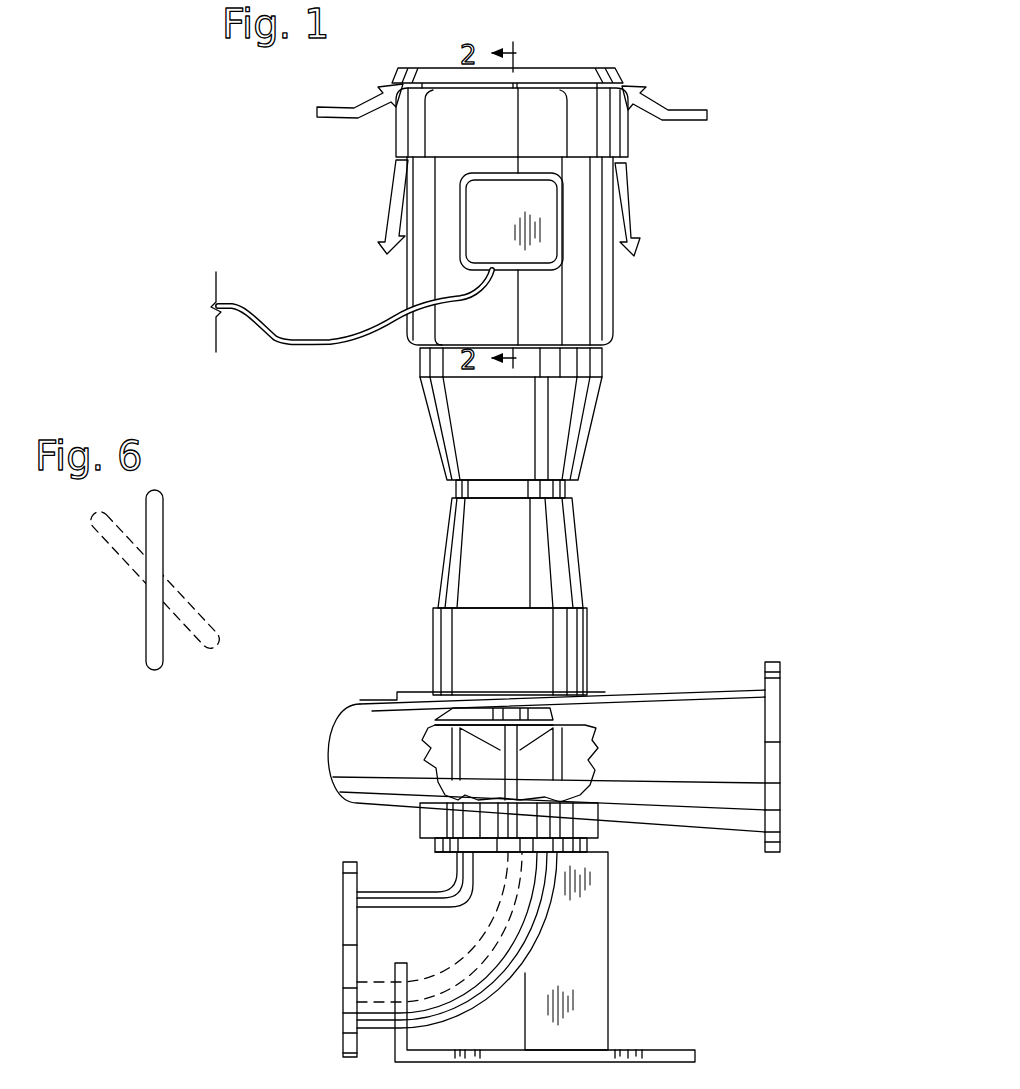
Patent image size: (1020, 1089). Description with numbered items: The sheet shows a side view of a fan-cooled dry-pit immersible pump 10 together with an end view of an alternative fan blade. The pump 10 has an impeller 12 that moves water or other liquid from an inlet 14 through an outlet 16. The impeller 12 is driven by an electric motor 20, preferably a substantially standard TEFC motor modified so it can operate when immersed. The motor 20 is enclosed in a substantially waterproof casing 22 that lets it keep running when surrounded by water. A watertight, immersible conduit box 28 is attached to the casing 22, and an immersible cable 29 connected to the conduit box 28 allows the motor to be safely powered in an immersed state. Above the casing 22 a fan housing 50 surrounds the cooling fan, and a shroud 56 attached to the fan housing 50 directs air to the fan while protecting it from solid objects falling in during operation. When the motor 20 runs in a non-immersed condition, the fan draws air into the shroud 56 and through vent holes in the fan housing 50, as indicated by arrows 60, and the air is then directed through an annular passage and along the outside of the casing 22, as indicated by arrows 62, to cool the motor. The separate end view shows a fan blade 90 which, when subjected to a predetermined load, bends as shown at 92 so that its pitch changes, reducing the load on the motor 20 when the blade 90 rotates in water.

In FIG. 1, the fan-cooled dry-pit immersible pump 10 is at (690, 508).
In FIG. 1, the impeller 12 is at (446, 755).
In FIG. 1, the inlet 14 is at (343, 908).
In FIG. 1, the outlet 16 is at (781, 690).
In FIG. 1, the electric motor 20 is at (340, 256).
In FIG. 1, the casing 22 is at (615, 263).
In FIG. 1, the conduit box 28 is at (511, 221).
In FIG. 1, the immersible cable 29 is at (318, 344).
In FIG. 1, the fan housing 50 is at (395, 145).
In FIG. 1, the shroud 56 is at (562, 68).
In FIG. 1, the arrows 60 is at (326, 121).
In FIG. 1, the arrows 62 is at (392, 197).
In FIG. 6, the fan blade 90 is at (147, 648).
In FIG. 6, the bent position of blade 92 is at (198, 613).